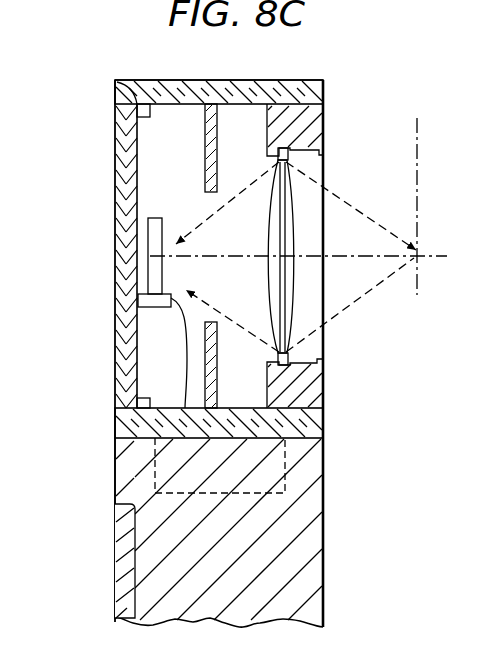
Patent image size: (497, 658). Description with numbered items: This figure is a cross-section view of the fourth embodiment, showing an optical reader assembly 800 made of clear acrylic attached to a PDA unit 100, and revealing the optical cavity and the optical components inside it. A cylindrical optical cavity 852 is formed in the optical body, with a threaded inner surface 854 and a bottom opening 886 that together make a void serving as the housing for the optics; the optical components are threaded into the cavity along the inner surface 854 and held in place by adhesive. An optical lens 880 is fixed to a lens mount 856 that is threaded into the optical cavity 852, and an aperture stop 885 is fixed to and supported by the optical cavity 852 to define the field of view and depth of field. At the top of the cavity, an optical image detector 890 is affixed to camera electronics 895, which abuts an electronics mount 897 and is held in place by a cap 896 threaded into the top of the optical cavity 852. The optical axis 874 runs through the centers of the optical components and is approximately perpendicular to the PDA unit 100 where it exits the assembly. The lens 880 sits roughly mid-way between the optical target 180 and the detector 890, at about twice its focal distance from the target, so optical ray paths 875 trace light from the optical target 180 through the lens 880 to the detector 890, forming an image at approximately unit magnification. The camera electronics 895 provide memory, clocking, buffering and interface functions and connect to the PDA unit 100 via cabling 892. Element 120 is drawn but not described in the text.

The PDA unit 100 is at (326, 527).
The mounting strip 120 is at (115, 576).
The optical target 180 is at (417, 178).
The optical reader assembly 800 is at (113, 135).
The optical cavity 852 is at (307, 352).
The inner surface 854 is at (235, 407).
The lens mount 856 is at (323, 335).
The optical axis 874 is at (433, 255).
The optical ray paths 875 is at (358, 207).
The optical lens 880 is at (292, 192).
The aperture stop 885 is at (236, 104).
The bottom opening 886 is at (293, 262).
The optical image detector 890 is at (162, 225).
The cabling 892 is at (183, 364).
The camera electronics 895 is at (138, 286).
The cap 896 is at (120, 182).
The electronics mount 897 is at (115, 80).